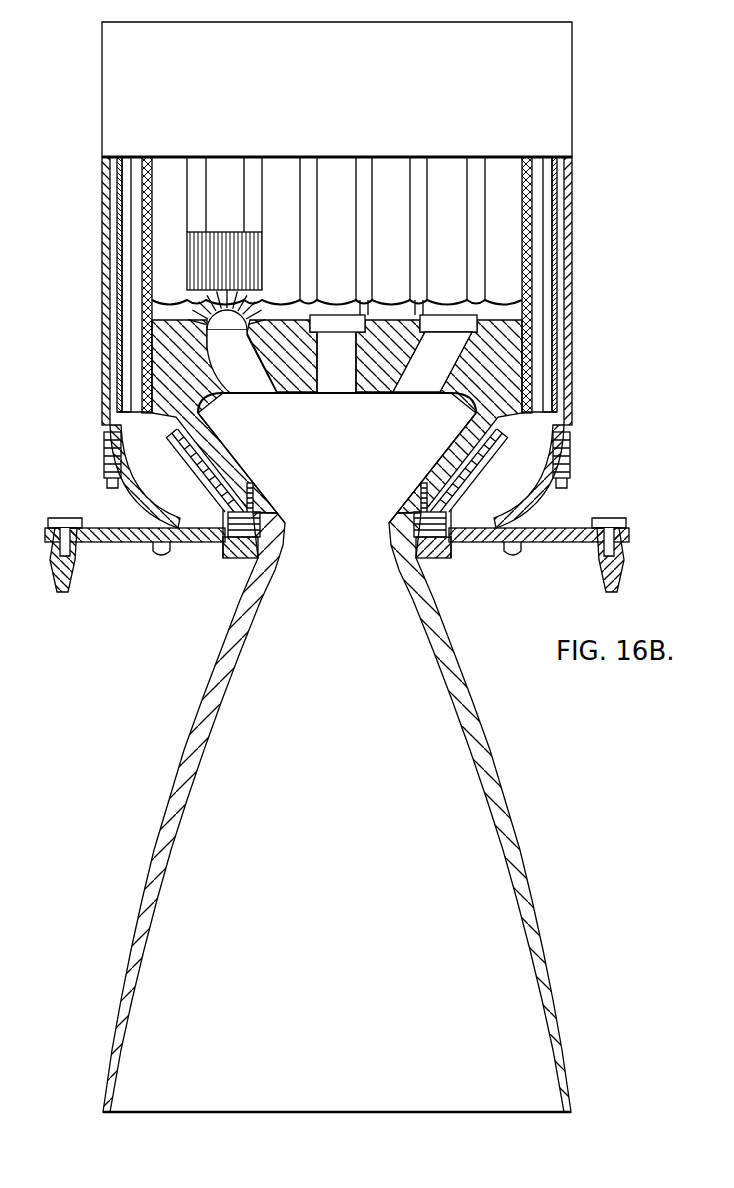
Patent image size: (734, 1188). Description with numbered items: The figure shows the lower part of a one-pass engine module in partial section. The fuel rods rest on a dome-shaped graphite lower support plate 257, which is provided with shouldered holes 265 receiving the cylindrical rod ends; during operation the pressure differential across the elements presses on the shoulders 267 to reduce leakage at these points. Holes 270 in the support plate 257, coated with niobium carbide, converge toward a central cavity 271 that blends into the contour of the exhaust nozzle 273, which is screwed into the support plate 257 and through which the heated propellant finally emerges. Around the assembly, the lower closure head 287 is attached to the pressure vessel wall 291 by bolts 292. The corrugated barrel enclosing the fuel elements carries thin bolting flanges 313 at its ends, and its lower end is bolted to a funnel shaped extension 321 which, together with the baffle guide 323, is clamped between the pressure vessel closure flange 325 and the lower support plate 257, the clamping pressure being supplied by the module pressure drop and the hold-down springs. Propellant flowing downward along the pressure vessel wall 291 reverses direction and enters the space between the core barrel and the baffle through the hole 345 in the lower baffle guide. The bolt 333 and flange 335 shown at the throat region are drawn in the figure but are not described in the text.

The lower support plate 257 is at (515, 359).
The shouldered holes 265 is at (236, 333).
The shoulders 267 is at (310, 334).
The holes 270 is at (248, 383).
The central cavity 271 is at (353, 463).
The exhaust nozzle 273 is at (114, 835).
The lower closure head 287 is at (493, 489).
The pressure vessel wall 291 is at (567, 392).
The bolts 292 is at (558, 478).
The bolting flanges 313 is at (138, 397).
The funnel shaped extension 321 is at (122, 428).
The baffle guide 323 is at (158, 490).
The pressure vessel closure flange 325 is at (262, 557).
The flange bolt 333 is at (252, 528).
The flange 335 is at (257, 538).
The hole 345 is at (522, 529).